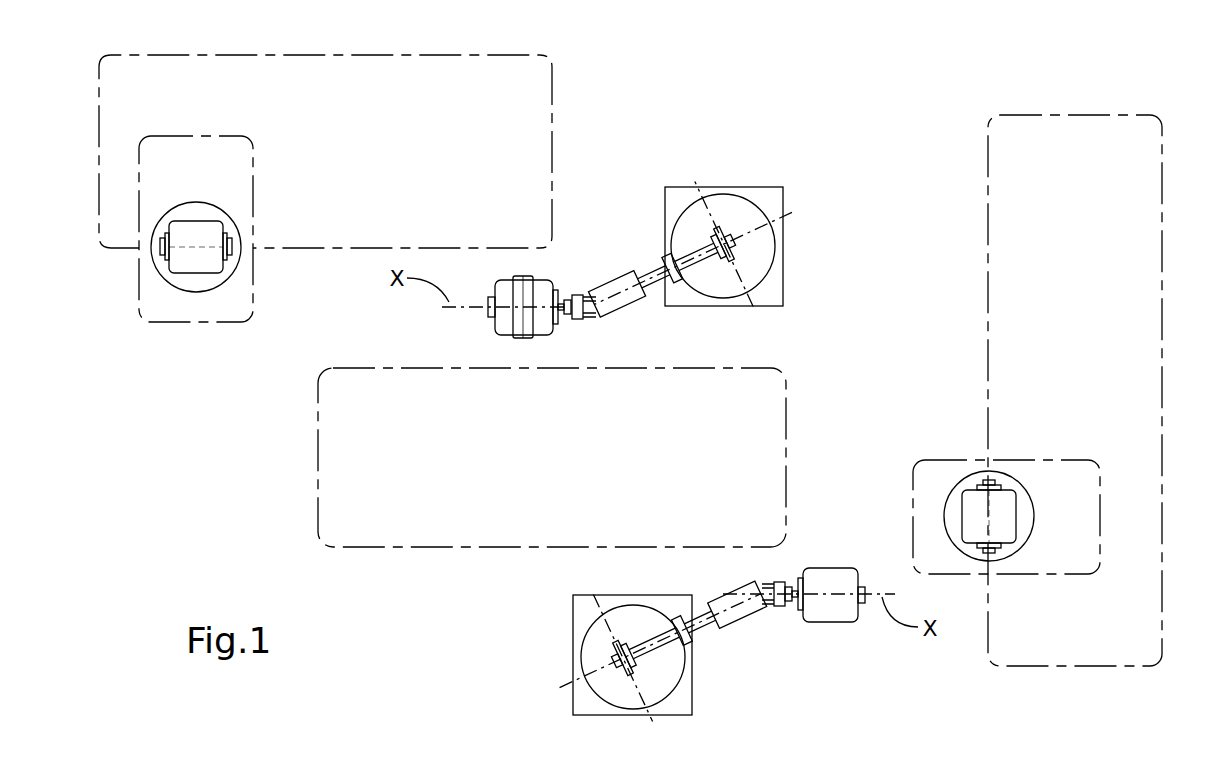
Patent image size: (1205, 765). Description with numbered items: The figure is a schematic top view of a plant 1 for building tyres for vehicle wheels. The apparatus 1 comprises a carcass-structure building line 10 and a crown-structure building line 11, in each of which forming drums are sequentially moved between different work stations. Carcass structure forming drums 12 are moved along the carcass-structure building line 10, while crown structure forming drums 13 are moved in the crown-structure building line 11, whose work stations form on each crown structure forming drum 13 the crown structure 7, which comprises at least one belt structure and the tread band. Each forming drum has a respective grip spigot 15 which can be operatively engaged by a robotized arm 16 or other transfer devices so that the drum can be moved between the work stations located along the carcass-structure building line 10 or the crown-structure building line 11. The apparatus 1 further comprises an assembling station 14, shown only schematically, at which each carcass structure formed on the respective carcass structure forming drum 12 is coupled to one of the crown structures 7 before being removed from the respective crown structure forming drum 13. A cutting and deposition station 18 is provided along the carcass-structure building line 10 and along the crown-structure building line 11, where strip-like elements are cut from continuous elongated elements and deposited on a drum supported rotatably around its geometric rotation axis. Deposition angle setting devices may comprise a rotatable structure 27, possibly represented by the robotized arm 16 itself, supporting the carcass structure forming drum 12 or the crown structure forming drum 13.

The plant for building tyres 1 is at (783, 145).
The crown structure 7 is at (528, 333).
The carcass-structure building line 10 is at (1047, 152).
The crown-structure building line 11 is at (528, 85).
The carcass structure forming drum 12 is at (972, 503).
The crown structure forming drum 13 is at (177, 267).
The assembling station 14 is at (750, 403).
The grip spigot 15 is at (557, 297).
The robotized arm 16 is at (670, 294).
The cutting and deposition station 18 is at (258, 162).
The rotatable structure 27 is at (213, 283).